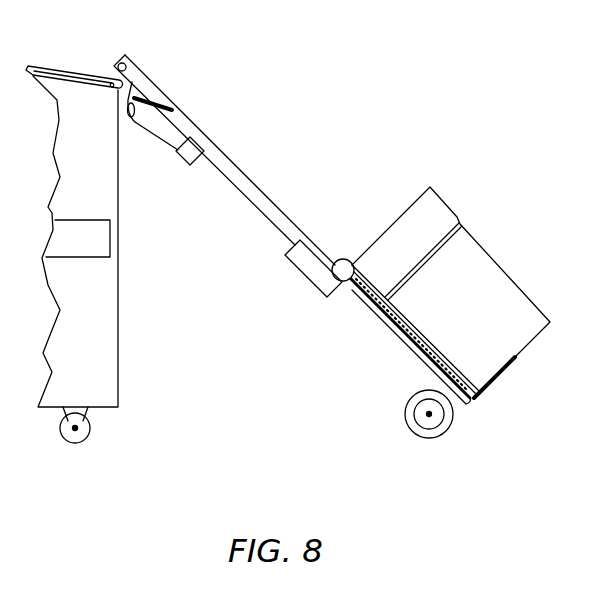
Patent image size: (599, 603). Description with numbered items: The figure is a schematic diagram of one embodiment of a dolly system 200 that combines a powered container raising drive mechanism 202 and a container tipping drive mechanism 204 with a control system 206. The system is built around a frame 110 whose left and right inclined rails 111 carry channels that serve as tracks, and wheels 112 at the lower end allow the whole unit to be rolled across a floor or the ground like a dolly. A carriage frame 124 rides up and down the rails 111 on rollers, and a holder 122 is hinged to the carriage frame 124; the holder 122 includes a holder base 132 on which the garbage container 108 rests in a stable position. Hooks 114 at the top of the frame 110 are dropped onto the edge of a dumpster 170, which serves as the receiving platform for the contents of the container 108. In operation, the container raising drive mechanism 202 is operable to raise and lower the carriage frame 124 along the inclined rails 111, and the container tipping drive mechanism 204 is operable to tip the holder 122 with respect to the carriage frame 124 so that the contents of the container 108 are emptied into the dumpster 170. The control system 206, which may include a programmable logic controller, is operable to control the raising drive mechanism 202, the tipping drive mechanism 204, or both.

The dolly system 200 is at (332, 227).
The container 108 is at (496, 348).
The frame 110 is at (263, 163).
The inclined rails 111 is at (287, 217).
The wheels 112 is at (405, 414).
The hooks 114 is at (110, 75).
The holder 122 is at (427, 323).
The carriage frame 124 is at (358, 313).
The holder base 132 is at (497, 385).
The dumpster 170 is at (74, 234).
The container raising drive mechanism 202 is at (302, 273).
The container tipping drive mechanism 204 is at (343, 259).
The control system 206 is at (177, 153).